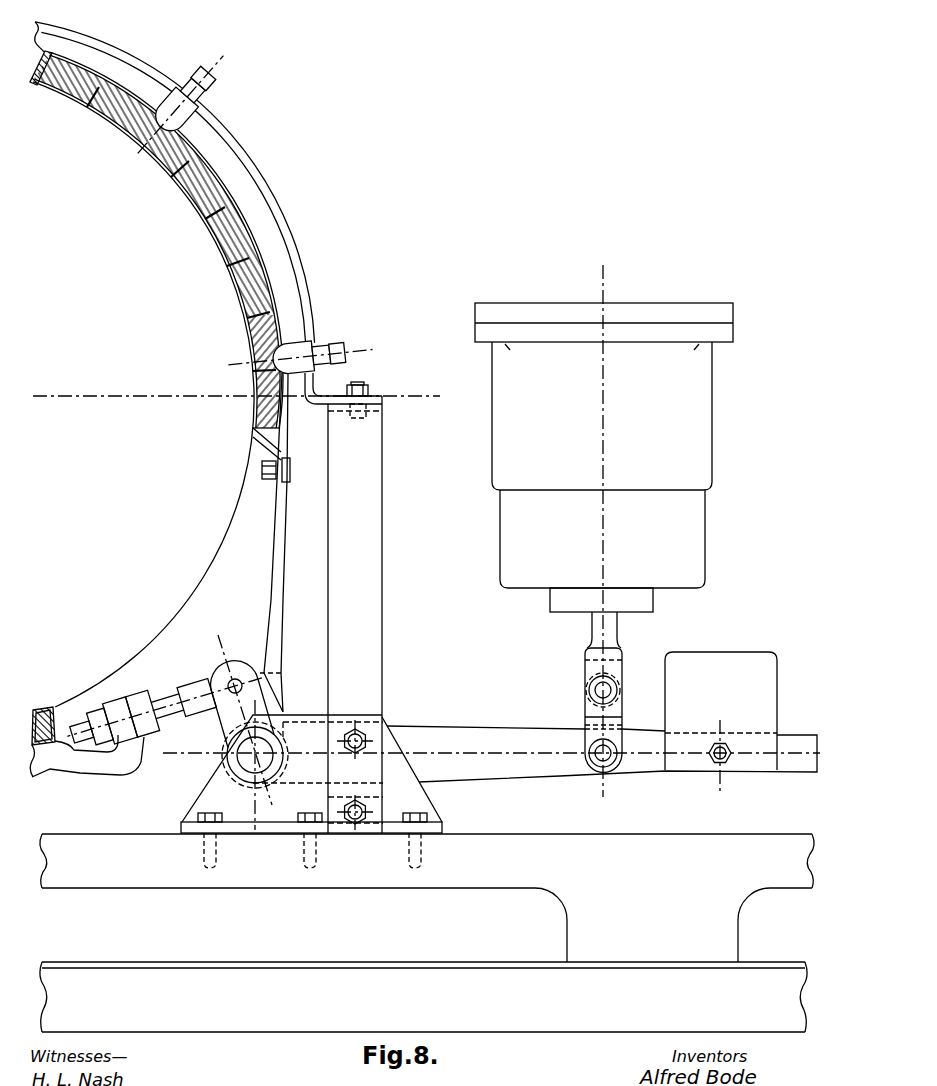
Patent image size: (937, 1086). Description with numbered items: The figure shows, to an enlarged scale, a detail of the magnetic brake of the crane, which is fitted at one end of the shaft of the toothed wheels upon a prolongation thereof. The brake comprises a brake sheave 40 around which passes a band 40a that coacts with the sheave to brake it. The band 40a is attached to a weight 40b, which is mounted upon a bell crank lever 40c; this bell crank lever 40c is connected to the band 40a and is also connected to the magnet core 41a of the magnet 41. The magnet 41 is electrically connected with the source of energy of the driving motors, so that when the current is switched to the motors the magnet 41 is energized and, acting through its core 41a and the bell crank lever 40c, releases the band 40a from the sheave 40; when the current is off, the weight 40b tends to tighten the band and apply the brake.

The brake sheave 40 is at (233, 507).
The band 40a is at (260, 278).
The weight 40b is at (750, 668).
The bell crank lever 40c is at (466, 728).
The magnet 41 is at (712, 408).
The magnet core 41a is at (643, 602).